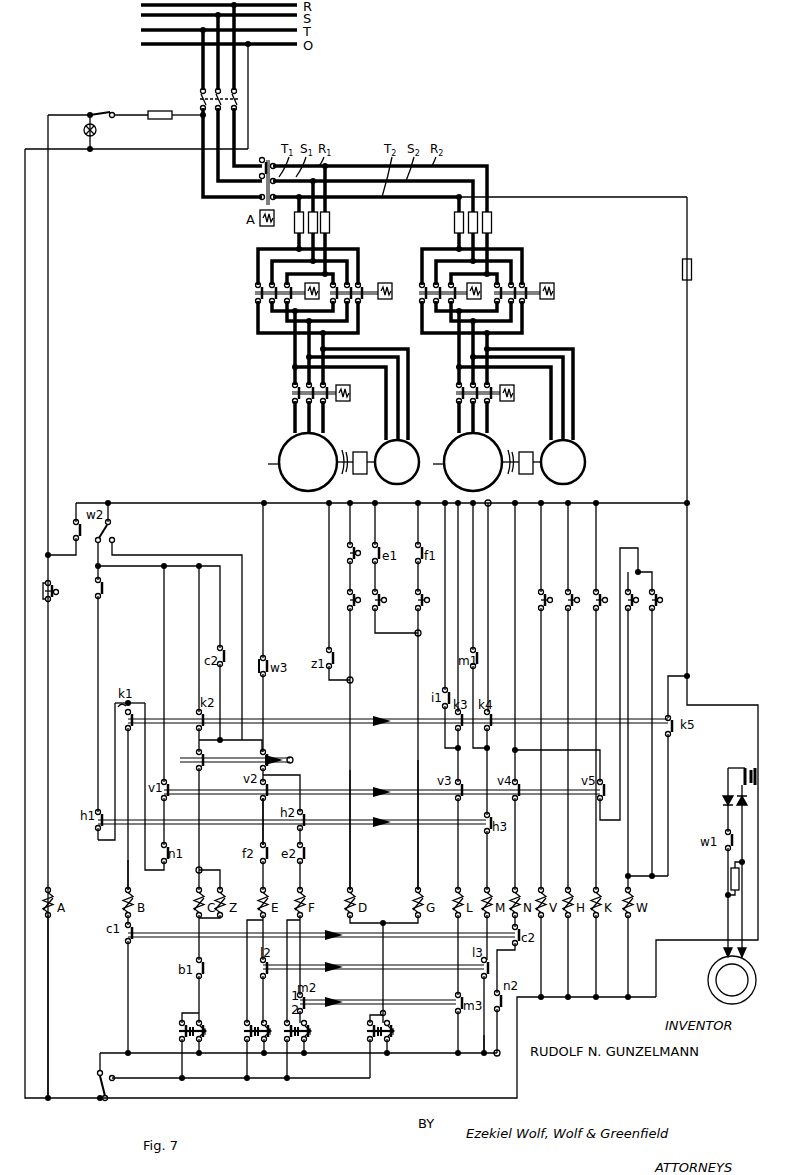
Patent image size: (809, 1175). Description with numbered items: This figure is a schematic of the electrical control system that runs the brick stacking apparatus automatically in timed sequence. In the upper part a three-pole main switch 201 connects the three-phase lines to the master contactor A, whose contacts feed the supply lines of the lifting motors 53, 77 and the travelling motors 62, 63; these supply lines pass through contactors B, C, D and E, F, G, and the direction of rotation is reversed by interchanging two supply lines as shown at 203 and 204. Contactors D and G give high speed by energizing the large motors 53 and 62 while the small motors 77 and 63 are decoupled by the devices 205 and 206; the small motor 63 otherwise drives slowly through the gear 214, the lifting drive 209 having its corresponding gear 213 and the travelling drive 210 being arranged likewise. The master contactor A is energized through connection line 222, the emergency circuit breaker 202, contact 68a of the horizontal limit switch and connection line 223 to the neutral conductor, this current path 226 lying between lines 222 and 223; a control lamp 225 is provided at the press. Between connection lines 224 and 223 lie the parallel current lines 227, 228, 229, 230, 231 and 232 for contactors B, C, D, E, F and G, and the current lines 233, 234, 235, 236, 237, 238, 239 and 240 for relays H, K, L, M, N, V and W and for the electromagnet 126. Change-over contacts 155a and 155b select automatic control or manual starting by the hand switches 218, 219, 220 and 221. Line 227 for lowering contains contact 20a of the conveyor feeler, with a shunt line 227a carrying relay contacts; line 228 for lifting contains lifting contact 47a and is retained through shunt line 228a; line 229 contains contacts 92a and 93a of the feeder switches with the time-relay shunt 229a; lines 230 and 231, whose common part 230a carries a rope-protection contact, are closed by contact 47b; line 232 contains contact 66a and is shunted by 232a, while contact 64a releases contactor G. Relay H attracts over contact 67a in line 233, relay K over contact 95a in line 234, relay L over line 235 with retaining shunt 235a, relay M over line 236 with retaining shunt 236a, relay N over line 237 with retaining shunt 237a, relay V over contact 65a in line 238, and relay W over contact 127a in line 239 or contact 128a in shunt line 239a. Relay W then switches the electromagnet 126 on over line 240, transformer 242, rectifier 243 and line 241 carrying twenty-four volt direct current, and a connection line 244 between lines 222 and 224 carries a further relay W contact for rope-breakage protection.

The three-pole main switch 201 is at (198, 100).
The emergency circuit breaker 202 is at (90, 114).
The control lamp 225 is at (96, 132).
The connection line 222 is at (48, 361).
The connection line 223 is at (26, 714).
The connection line 224 is at (686, 353).
The current path 226 is at (47, 996).
The supply line interchange 203 is at (331, 336).
The supply line interchange 204 is at (496, 336).
The first drive motor 209 is at (268, 464).
The second drive motor 210 is at (433, 464).
The clutch 213 is at (360, 452).
The gear 214 is at (526, 452).
The decoupling device 205 is at (344, 477).
The coupling 206 is at (510, 477).
The high-speed lifting motor 53 is at (283, 485).
The low-speed lifting motor 77 is at (398, 484).
The high-speed transport motor 62 is at (453, 485).
The low-speed transport motor 63 is at (564, 484).
The connection line 244 is at (69, 552).
The change-over switch contact 155a is at (113, 527).
The change-over switch contact 155b is at (104, 1084).
The limit switch contact 68a is at (54, 594).
The feeler contact 20a is at (102, 591).
The shunt line 227a is at (160, 628).
The shunt line 228a is at (198, 599).
The shunt line 229a is at (328, 532).
The common line part 230a is at (264, 564).
The shunt line 232a is at (376, 525).
The shunt line 235a is at (418, 541).
The shunt line 236a is at (475, 535).
The lifting limit switch contact 47a is at (229, 760).
The lifting limit switch contact 47b is at (278, 759).
The current line 227 is at (126, 874).
The current path 228 is at (199, 812).
The current line 229 is at (350, 775).
The current line 230 is at (271, 836).
The current line 231 is at (300, 775).
The current line 232 is at (417, 748).
The current line 233 is at (574, 851).
The current line 234 is at (601, 851).
The current line 235 is at (458, 874).
The current line 236 is at (490, 874).
The current line 237 is at (518, 851).
The current line 238 is at (546, 851).
The current line 239 is at (627, 627).
The shunt line 239a is at (649, 669).
The current line 240 is at (758, 736).
The current line 241 is at (726, 876).
The transformer 242 is at (743, 768).
The rectifier 243 is at (730, 798).
The electromagnet 126 is at (718, 968).
The feeder switch contact 92a is at (348, 549).
The feeder switch contact 93a is at (348, 596).
The change-over switch contact 64a is at (380, 598).
The switch contact 66a is at (424, 598).
The travelling limit switch contact 65a is at (547, 598).
The travelling limit switch contact 67a is at (580, 592).
The rope switch contact 95a is at (601, 598).
The switch contact 127a is at (632, 589).
The switch contact 128a is at (657, 600).
The hand operated switch 218 is at (200, 1033).
The hand operated switch 219 is at (262, 1033).
The hand operated switch 220 is at (302, 1033).
The hand operated switch 221 is at (387, 1033).
The shunt line 237a is at (496, 1035).